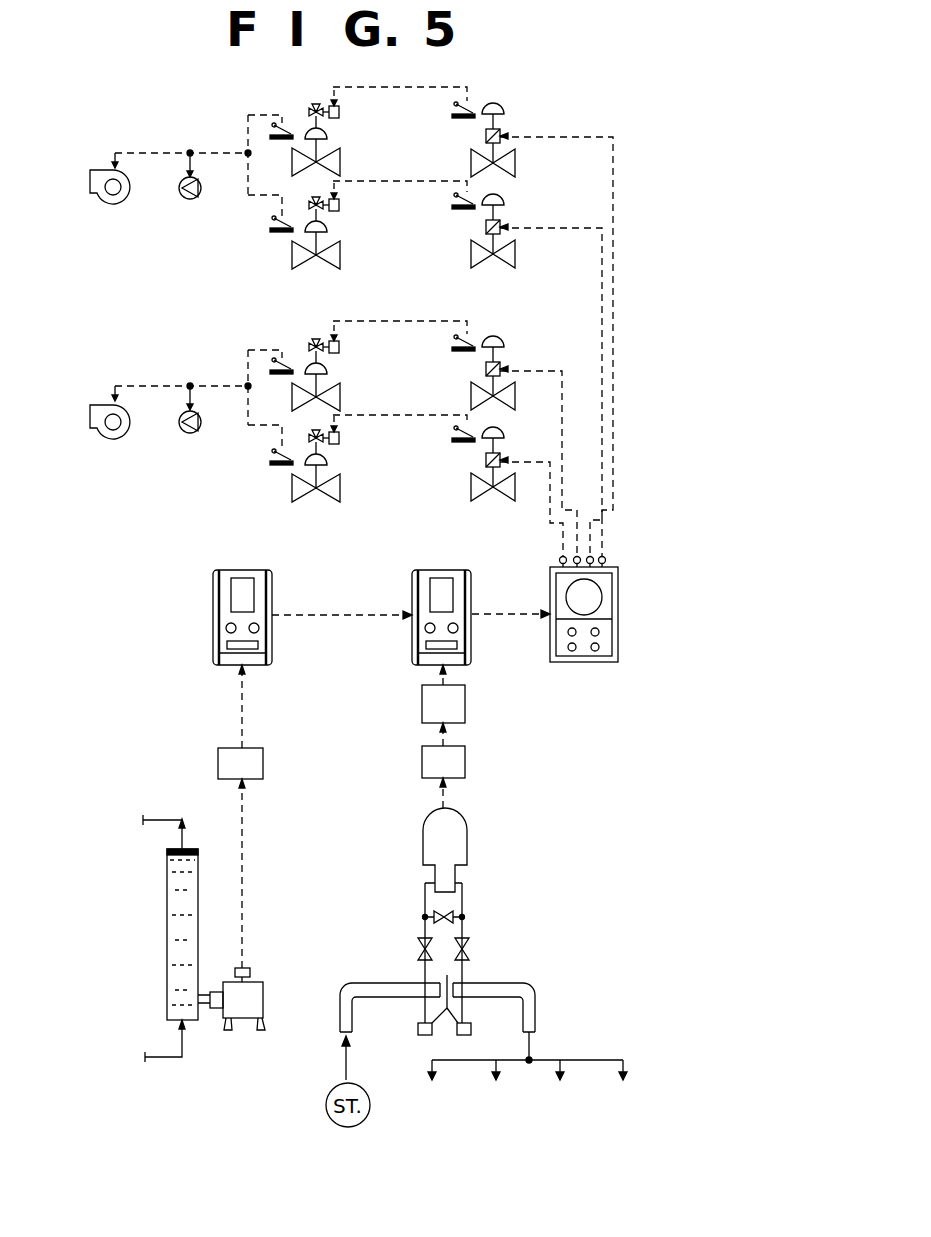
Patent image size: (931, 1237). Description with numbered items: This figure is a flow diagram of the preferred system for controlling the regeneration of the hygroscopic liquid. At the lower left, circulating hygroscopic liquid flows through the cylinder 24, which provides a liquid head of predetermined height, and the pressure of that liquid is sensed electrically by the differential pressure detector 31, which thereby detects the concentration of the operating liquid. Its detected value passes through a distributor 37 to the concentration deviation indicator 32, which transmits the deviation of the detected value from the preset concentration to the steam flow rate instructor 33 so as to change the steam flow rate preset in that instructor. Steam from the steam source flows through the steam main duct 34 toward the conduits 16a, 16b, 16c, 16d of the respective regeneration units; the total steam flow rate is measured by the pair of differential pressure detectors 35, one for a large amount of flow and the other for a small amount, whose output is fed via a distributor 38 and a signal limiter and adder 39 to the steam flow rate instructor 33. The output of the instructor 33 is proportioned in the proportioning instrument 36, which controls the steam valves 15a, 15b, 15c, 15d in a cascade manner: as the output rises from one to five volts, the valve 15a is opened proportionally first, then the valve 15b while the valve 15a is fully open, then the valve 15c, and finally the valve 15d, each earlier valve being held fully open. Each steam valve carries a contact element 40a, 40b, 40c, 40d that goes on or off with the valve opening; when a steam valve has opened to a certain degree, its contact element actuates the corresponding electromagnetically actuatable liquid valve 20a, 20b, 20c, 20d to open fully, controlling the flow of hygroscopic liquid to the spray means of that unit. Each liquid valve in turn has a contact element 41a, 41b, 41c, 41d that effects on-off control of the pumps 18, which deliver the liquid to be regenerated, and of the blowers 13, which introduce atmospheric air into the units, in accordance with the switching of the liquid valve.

The blower 13 is at (125, 200).
The pump 18 is at (196, 198).
The contact element 41a is at (276, 141).
The contact element 41b is at (276, 234).
The contact element 41c is at (276, 376).
The contact element 41d is at (276, 467).
The valve 20a is at (340, 155).
The valve 20b is at (340, 258).
The valve 20c is at (340, 392).
The valve 20d is at (340, 485).
The contact element 40a is at (455, 120).
The contact element 40b is at (455, 211).
The contact element 40c is at (455, 353).
The contact element 40d is at (455, 444).
The valve 15a is at (512, 170).
The valve 15b is at (512, 262).
The valve 15c is at (512, 403).
The valve 15d is at (512, 495).
The concentration deviation indicator 32 is at (272, 643).
The steam flow rate instructor 33 is at (472, 650).
The proportioning instrument 36 is at (618, 650).
The distributor 37 is at (263, 765).
The distributor 38 is at (465, 762).
The signal limiter and adder 39 is at (465, 703).
The differential pressure detectors 35 is at (467, 843).
The steam main duct 34 is at (507, 983).
The cylinder 24 is at (218, 898).
The differential pressure detector 31 is at (255, 987).
The conduit 16a is at (433, 1102).
The conduit 16b is at (501, 1102).
The conduit 16c is at (560, 1102).
The conduit 16d is at (621, 1102).